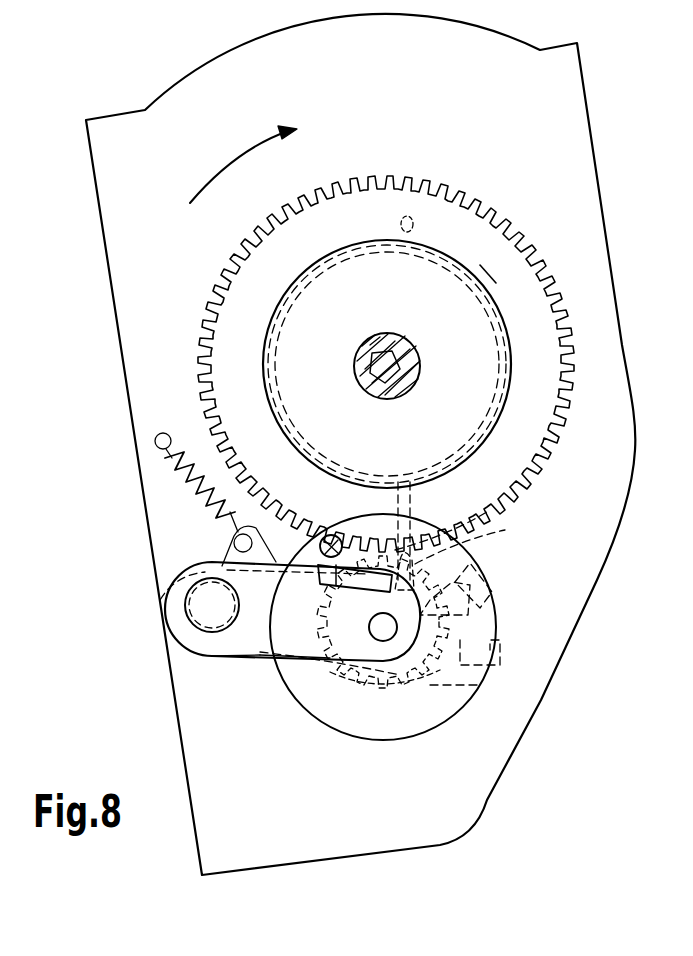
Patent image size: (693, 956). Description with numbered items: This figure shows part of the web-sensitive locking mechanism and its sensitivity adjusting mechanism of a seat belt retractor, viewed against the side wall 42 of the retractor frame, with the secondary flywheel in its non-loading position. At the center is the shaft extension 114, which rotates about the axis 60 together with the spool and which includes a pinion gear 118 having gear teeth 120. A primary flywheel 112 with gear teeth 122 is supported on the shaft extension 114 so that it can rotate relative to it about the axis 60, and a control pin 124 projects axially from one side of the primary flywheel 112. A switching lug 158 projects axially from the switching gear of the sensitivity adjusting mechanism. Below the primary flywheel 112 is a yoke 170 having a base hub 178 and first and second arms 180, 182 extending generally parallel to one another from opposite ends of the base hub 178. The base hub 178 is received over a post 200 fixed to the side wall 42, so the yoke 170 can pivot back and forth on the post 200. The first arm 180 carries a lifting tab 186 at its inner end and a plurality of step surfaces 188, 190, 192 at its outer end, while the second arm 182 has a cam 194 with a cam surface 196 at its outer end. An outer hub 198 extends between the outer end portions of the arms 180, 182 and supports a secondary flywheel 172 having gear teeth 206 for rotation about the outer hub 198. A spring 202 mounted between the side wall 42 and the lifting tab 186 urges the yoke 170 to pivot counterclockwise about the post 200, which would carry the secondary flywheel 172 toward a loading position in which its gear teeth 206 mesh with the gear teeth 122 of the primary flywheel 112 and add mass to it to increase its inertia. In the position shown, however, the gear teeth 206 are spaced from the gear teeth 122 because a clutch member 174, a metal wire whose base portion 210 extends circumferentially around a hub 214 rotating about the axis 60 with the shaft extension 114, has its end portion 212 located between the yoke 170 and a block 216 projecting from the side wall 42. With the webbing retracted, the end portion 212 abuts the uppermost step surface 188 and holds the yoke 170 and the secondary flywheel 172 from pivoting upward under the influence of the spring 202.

The side wall 42 is at (135, 380).
The axis 60 is at (420, 373).
The primary flywheel 112 is at (333, 232).
The shaft extension 114 is at (364, 338).
The pinion gear 118 is at (362, 361).
The gear teeth 120 is at (376, 343).
The gear teeth 122 is at (250, 248).
The control pin 124 is at (415, 222).
The switching lug 158 is at (331, 535).
The yoke 170 is at (188, 584).
The secondary flywheel 172 is at (297, 704).
The clutch member 174 is at (465, 262).
The base hub 178 is at (160, 600).
The first arm 180 is at (262, 656).
The second arm 182 is at (292, 655).
The lifting tab 186 is at (230, 549).
The step surface 188 is at (472, 553).
The step surface 190 is at (505, 625).
The step surface 192 is at (498, 650).
The cam 194 is at (325, 580).
The cam surface 196 is at (355, 578).
The outer hub 198 is at (390, 636).
The post 200 is at (190, 606).
The spring 202 is at (172, 488).
The gear teeth 206 is at (346, 680).
The base portion 210 is at (498, 302).
The end portion 212 is at (478, 538).
The hub 214 is at (488, 292).
The block 216 is at (490, 585).